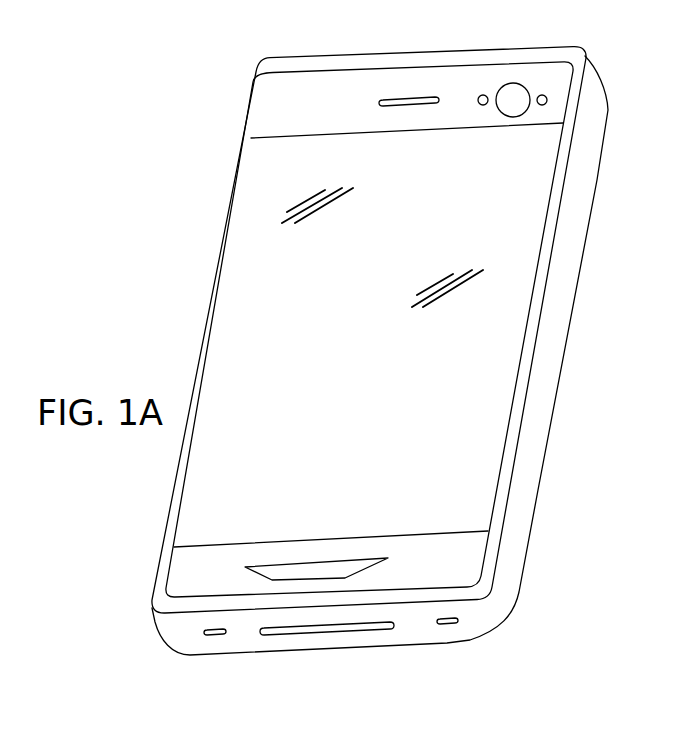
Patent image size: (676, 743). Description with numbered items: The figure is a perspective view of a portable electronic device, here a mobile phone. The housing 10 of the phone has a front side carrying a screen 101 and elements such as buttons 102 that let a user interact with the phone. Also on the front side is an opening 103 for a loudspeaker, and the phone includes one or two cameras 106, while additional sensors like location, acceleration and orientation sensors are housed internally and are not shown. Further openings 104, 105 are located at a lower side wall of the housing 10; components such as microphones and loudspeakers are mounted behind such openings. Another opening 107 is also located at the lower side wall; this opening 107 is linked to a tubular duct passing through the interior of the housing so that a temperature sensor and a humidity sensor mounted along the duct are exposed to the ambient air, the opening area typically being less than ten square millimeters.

The housing 10 is at (590, 331).
The screen 101 is at (376, 413).
The buttons 102 is at (295, 568).
The opening for a loudspeaker 103 is at (382, 105).
The opening 104 is at (212, 636).
The opening 105 is at (385, 627).
The camera 106 is at (517, 84).
The opening 107 is at (438, 627).